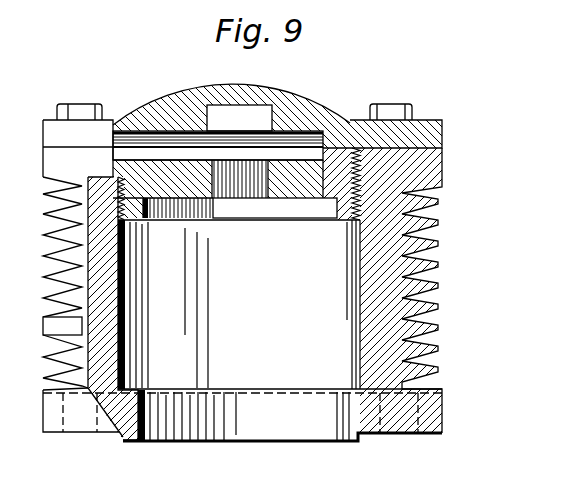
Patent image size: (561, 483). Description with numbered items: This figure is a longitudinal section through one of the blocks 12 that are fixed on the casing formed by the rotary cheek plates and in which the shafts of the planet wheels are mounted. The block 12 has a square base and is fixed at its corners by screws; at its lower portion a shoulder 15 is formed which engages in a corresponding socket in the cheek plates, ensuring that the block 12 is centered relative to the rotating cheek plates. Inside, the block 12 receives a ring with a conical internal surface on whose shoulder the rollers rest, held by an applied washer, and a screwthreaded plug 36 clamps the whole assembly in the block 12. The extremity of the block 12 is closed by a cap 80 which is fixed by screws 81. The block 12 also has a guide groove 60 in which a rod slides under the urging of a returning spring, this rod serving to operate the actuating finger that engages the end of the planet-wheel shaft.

The block 12 is at (422, 186).
The shoulder 15 is at (358, 438).
The screwthreaded plug 36 is at (340, 140).
The guide groove 60 is at (80, 203).
The cap 80 is at (288, 108).
The screws 81 is at (100, 115).